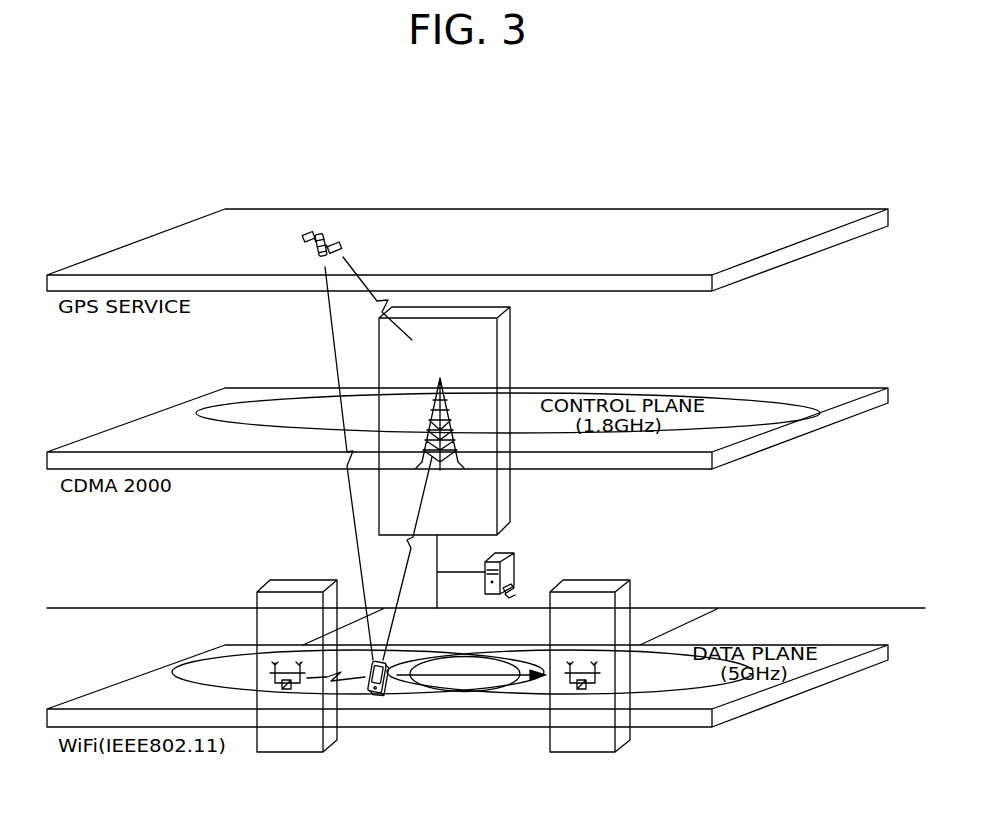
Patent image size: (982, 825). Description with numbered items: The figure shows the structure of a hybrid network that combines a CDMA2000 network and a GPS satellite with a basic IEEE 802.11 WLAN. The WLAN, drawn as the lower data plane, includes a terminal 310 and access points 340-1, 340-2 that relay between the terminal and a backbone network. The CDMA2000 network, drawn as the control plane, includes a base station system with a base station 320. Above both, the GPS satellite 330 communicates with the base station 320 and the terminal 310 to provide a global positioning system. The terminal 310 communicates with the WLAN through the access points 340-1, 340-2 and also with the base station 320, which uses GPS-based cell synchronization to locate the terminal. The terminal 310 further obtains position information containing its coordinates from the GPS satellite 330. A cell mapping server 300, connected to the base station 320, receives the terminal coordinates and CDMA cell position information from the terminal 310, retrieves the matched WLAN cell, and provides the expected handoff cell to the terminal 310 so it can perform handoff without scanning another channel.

The cell mapping server 300 is at (503, 553).
The terminal 310 is at (386, 693).
The base station 320 is at (500, 338).
The GPS satellite 330 is at (321, 232).
The access point 340-1 is at (272, 582).
The access point 340-2 is at (626, 582).